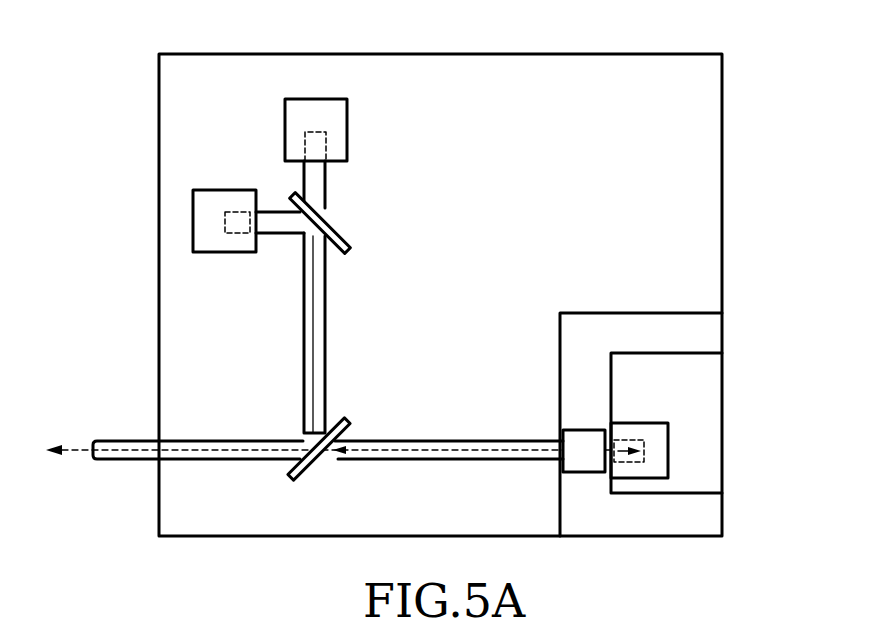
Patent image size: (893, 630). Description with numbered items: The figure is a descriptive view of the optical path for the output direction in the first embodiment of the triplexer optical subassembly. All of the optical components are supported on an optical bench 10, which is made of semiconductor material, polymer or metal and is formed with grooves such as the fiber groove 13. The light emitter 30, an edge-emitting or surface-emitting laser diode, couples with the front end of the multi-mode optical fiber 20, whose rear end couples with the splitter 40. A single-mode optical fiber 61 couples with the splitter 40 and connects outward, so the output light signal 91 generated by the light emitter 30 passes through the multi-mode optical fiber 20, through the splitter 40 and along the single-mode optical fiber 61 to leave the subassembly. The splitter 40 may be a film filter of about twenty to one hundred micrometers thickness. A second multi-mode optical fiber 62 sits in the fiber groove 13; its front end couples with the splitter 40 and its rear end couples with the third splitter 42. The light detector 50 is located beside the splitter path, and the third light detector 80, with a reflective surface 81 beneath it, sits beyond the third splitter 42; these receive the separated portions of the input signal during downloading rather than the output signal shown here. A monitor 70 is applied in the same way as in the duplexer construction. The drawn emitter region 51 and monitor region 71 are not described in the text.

The optical bench 10 is at (722, 232).
The fiber groove 13 is at (325, 373).
The multi-mode optical fiber 20 is at (458, 441).
The light emitter 30 is at (585, 472).
The splitter 40 is at (317, 460).
The third splitter 42 is at (328, 222).
The light detector 50 is at (327, 143).
The light source 51 is at (313, 107).
The single-mode optical fiber 61 is at (223, 441).
The second multi-mode optical fiber 62 is at (312, 329).
The monitor 70 is at (660, 445).
The light emitter 71 is at (628, 462).
The third light detector 80 is at (207, 217).
The reflective surface 81 is at (242, 212).
The output light signal 91 is at (75, 449).